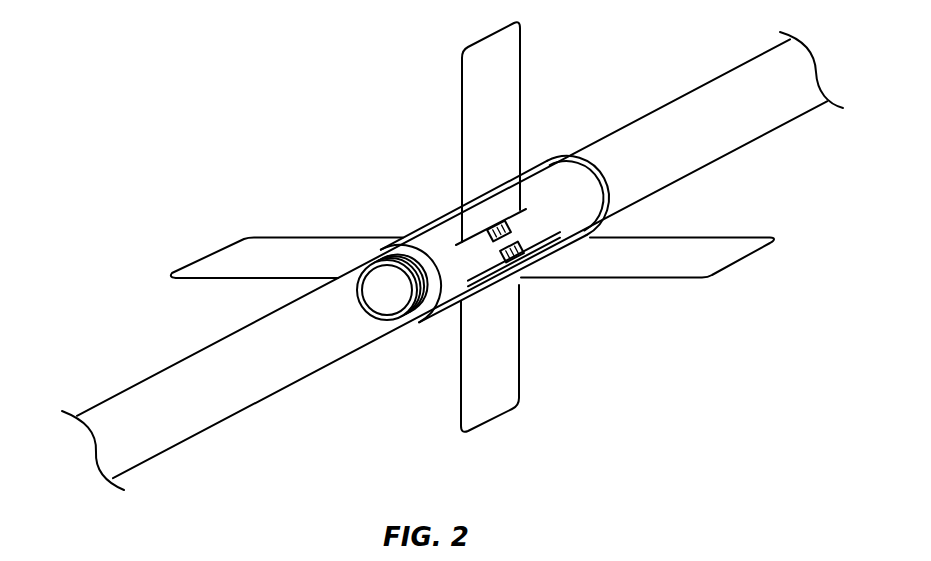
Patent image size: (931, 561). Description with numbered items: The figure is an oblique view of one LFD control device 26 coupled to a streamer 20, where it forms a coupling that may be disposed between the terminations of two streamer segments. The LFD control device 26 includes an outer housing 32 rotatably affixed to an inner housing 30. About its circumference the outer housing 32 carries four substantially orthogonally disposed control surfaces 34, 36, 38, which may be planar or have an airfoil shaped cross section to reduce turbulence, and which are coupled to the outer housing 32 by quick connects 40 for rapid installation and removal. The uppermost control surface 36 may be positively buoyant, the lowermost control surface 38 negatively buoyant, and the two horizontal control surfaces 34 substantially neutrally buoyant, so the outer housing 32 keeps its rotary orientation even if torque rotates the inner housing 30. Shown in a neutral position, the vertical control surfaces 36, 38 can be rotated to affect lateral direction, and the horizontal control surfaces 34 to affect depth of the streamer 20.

The streamer 20 is at (204, 433).
The LFD control device 26 is at (472, 227).
The inner housing 30 is at (414, 322).
The outer housing 32 is at (604, 222).
The control surfaces 34 is at (278, 236).
The control surface 36 is at (510, 90).
The control surface 38 is at (477, 388).
The quick connects 40 is at (494, 222).